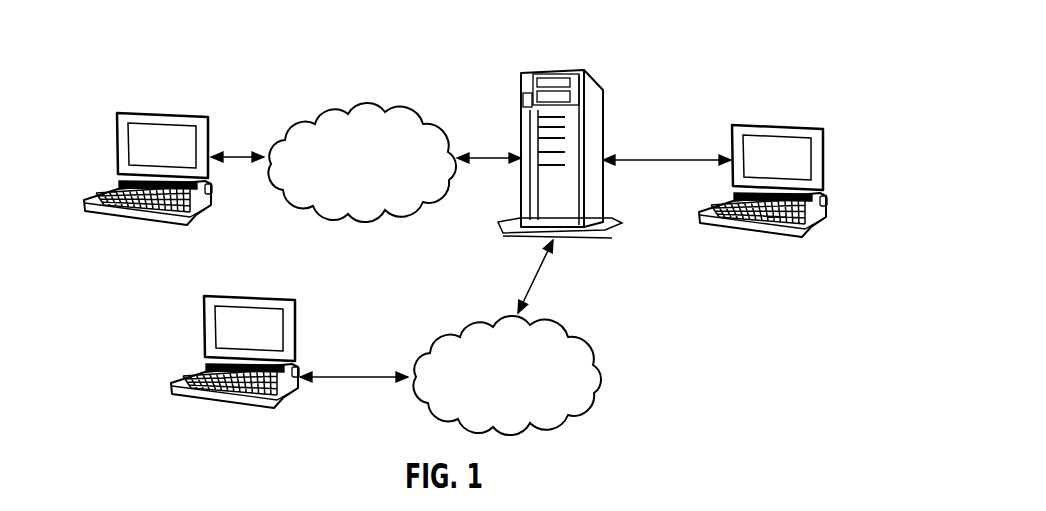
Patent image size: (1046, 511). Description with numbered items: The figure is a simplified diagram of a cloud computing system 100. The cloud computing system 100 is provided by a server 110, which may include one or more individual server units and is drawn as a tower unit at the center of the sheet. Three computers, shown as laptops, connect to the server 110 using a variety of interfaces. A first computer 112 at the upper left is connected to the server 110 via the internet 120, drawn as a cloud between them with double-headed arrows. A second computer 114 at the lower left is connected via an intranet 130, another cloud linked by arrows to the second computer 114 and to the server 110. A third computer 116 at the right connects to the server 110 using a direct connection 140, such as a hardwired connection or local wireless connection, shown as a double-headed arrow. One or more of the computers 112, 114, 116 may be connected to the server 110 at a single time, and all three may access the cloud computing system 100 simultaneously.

The cloud computing system 100 is at (107, 69).
The server 110 is at (591, 82).
The first computer 112 is at (160, 114).
The second computer 114 is at (203, 313).
The third computer 116 is at (797, 123).
The internet 120 is at (337, 184).
The intranet 130 is at (485, 399).
The direct connection 140 is at (658, 157).